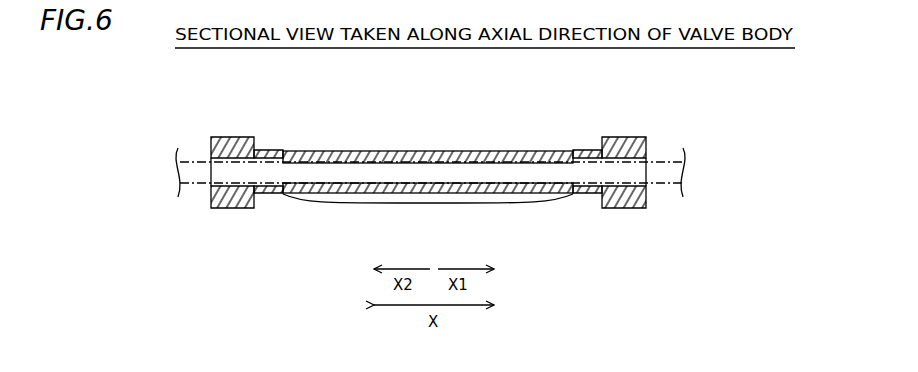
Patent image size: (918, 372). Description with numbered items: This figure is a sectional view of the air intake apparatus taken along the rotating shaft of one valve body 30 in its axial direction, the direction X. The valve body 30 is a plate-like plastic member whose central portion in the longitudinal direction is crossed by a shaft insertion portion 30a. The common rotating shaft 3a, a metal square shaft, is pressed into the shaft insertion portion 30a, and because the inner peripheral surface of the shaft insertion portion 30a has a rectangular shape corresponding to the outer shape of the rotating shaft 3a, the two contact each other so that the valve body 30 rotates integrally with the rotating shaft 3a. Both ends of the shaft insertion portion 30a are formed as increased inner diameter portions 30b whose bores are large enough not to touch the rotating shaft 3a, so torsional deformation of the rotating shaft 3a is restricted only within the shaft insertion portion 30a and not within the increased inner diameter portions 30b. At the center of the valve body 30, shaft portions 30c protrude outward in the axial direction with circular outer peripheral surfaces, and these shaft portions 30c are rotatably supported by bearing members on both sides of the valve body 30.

The rotating shaft 3a is at (655, 161).
The valve body 30 is at (450, 152).
The shaft insertion portion 30a is at (364, 160).
The increased inner diameter portion 30b is at (262, 162).
The shaft portion 30c is at (241, 209).